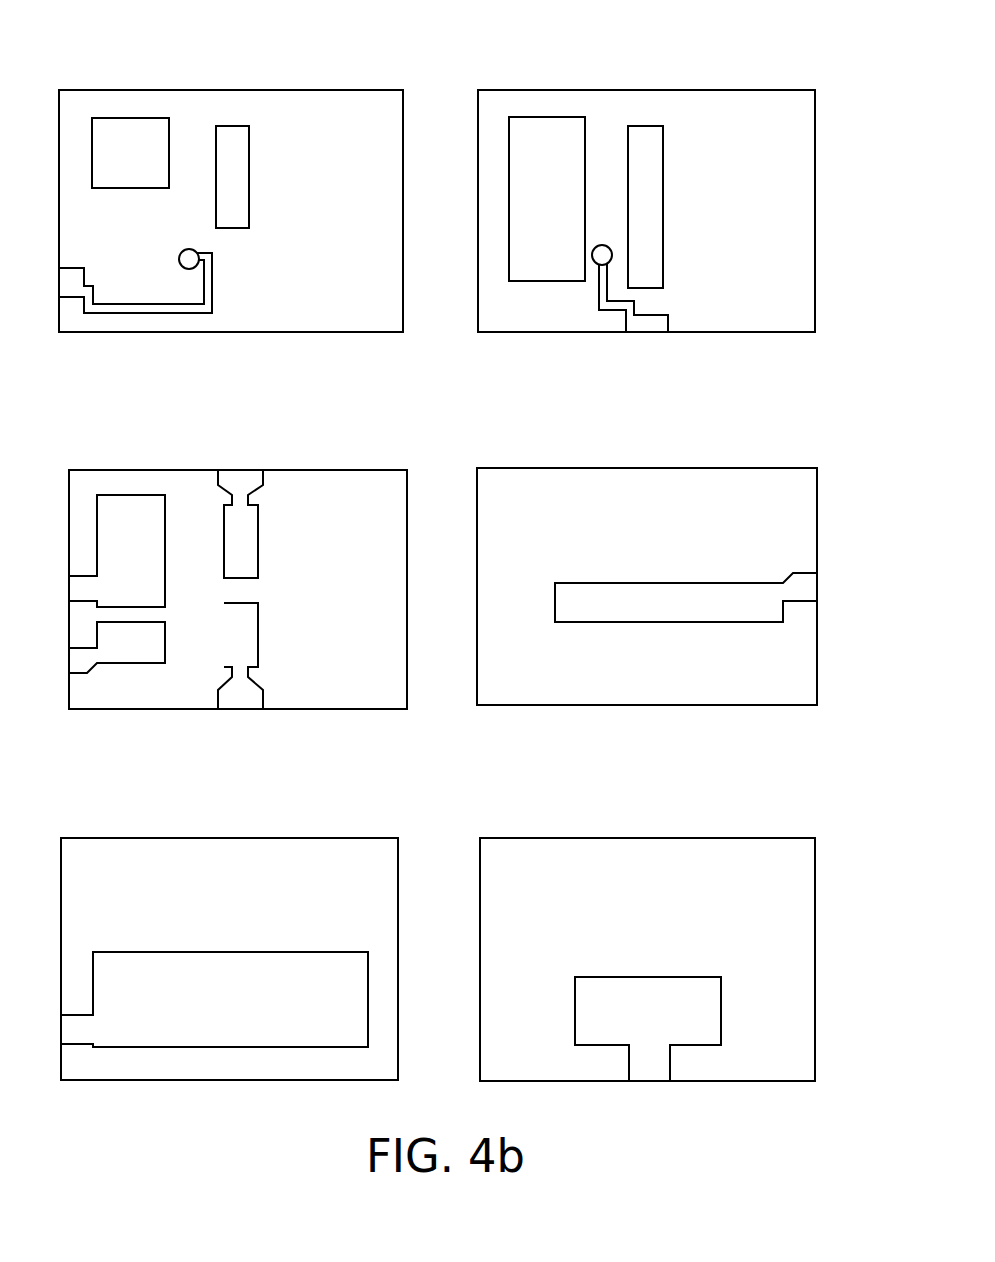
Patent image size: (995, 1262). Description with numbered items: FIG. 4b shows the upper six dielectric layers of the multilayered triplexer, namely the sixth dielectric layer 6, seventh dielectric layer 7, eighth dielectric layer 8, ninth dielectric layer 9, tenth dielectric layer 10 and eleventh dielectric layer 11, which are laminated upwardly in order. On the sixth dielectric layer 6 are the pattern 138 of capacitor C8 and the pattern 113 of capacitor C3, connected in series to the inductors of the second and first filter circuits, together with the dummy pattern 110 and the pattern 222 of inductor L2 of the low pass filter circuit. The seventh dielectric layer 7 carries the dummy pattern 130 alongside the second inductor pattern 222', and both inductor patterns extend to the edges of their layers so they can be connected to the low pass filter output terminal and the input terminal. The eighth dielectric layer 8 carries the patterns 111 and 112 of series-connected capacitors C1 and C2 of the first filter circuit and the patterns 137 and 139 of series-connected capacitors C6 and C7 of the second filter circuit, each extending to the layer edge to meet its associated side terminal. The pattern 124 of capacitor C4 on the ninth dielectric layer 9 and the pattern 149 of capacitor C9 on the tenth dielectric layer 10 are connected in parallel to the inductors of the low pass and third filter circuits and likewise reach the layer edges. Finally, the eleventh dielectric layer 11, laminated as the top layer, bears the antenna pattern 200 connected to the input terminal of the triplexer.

The sixth dielectric layer 6 is at (358, 80).
The seventh dielectric layer 7 is at (772, 84).
The eighth dielectric layer 8 is at (368, 464).
The ninth dielectric layer 9 is at (777, 460).
The tenth dielectric layer 10 is at (353, 832).
The eleventh dielectric layer 11 is at (773, 826).
The pattern of capacitor C8 138 is at (134, 118).
The pattern of capacitor C3 113 is at (226, 126).
The pattern of inductor L2 222 is at (151, 316).
The dummy pattern 130 is at (538, 117).
The dummy pattern 110 is at (643, 126).
The pattern of inductor L2 222' is at (617, 320).
The pattern of capacitor C6 137 is at (118, 495).
The pattern of capacitor C2 112 is at (237, 476).
The pattern of capacitor C1 111 is at (260, 695).
The pattern of capacitor C7 139 is at (136, 663).
The pattern of capacitor C9 149 is at (672, 615).
The pattern of capacitor C4 124 is at (156, 1043).
The antenna pattern 200 is at (648, 1062).